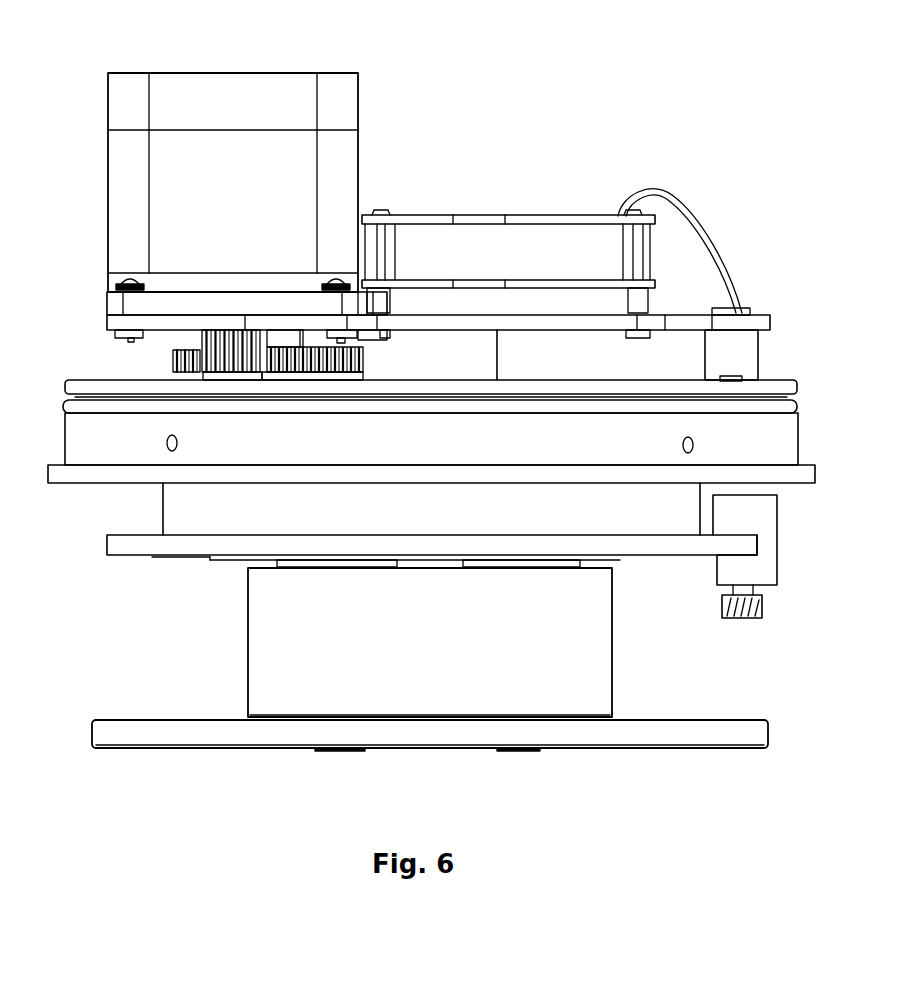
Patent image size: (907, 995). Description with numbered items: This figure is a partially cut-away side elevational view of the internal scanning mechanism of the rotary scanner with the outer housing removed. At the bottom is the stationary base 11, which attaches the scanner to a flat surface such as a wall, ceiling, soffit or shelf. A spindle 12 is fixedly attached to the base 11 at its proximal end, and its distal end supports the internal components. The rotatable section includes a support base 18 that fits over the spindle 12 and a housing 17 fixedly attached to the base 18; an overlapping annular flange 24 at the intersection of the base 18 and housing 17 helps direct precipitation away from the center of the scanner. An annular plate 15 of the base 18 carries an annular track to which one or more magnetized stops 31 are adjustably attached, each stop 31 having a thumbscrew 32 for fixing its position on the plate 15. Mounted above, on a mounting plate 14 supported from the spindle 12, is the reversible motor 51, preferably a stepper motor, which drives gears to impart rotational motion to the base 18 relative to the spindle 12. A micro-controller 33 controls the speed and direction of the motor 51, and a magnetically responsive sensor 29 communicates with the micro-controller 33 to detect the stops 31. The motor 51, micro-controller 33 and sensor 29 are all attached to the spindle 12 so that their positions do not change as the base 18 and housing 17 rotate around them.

The base 11 is at (722, 740).
The spindle 12 is at (480, 357).
The motor mounting plate 14 is at (160, 322).
The annular plate 15 is at (640, 545).
The housing 17 is at (782, 445).
The support base 18 is at (680, 497).
The overlapping annular flange 24 is at (808, 478).
The magnetically responsive sensor 29 is at (742, 362).
The stop 31 is at (767, 572).
The thumbscrew 32 is at (757, 612).
The micro-controller 33 is at (545, 222).
The reversible motor 51 is at (258, 95).